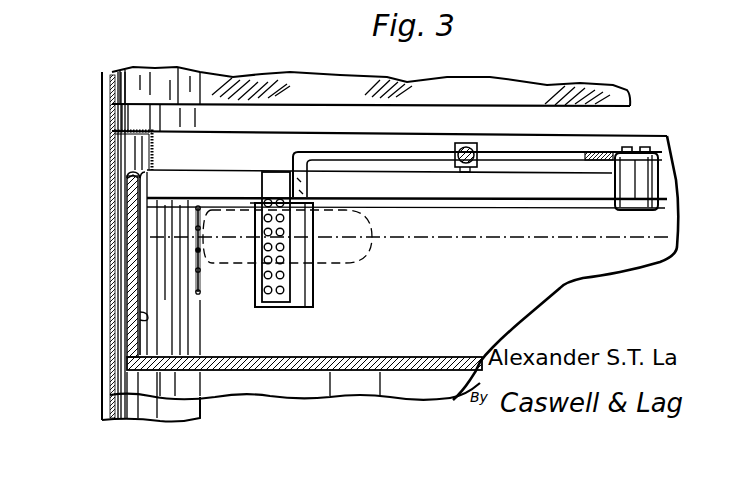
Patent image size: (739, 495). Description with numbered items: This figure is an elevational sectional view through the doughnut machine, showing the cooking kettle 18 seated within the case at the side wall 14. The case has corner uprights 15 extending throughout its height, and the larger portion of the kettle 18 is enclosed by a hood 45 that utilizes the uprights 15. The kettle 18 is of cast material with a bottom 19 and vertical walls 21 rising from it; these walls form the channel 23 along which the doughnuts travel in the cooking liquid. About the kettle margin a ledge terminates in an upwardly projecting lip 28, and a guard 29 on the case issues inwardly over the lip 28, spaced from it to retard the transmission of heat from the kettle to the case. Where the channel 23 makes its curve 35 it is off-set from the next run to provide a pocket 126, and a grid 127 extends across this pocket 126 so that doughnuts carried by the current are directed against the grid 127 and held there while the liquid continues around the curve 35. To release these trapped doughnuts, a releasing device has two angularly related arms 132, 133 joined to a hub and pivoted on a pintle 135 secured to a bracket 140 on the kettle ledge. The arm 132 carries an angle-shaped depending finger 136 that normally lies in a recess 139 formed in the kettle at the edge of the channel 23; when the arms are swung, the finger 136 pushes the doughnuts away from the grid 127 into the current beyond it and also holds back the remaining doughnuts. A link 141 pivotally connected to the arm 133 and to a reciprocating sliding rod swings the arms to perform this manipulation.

The side wall 14 is at (110, 338).
The upright 15 is at (133, 407).
The cooking kettle 18 is at (417, 370).
The bottom 19 is at (352, 371).
The vertical wall 21 is at (128, 260).
The channel 23 is at (520, 272).
The lip 28 is at (128, 180).
The guard 29 is at (130, 130).
The curve 35 is at (140, 316).
The hood 45 is at (305, 82).
The pocket 126 is at (157, 252).
The grid 127 is at (198, 228).
The arm 132 is at (378, 154).
The arm 133 is at (594, 152).
The pintle 135 is at (643, 150).
The depending finger 136 is at (283, 287).
The recess 139 is at (313, 305).
The bracket 140 is at (641, 175).
The link 141 is at (470, 165).